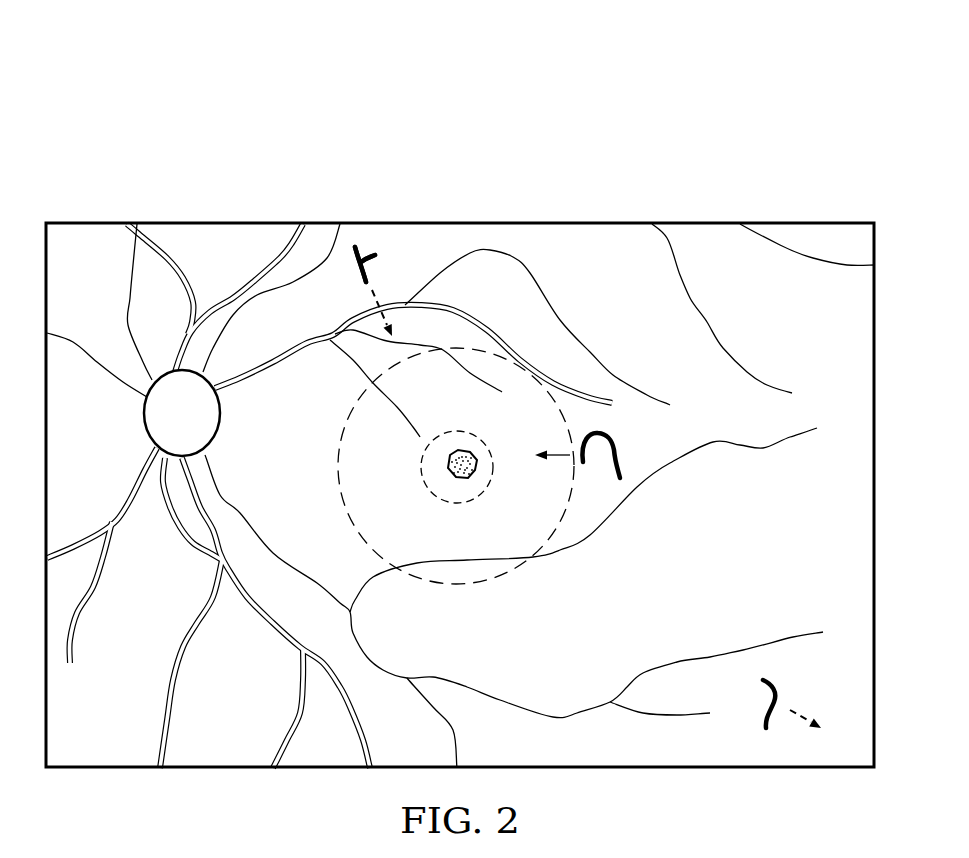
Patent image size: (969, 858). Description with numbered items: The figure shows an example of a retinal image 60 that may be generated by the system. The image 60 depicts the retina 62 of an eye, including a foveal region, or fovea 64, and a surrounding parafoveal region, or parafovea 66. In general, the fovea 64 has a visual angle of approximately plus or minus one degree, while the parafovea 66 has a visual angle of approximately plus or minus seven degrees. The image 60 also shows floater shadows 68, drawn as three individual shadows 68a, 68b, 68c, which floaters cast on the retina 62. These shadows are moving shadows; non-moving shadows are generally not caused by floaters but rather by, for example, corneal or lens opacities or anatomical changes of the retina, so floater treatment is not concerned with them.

The retinal image 60 is at (460, 389).
The retina 62 is at (460, 453).
The fovea 64 is at (492, 457).
The parafovea 66 is at (482, 582).
The floater shadows 68 is at (368, 238).
The floater shadow 68a is at (375, 255).
The floater shadow 68b is at (613, 441).
The floater shadow 68c is at (776, 700).